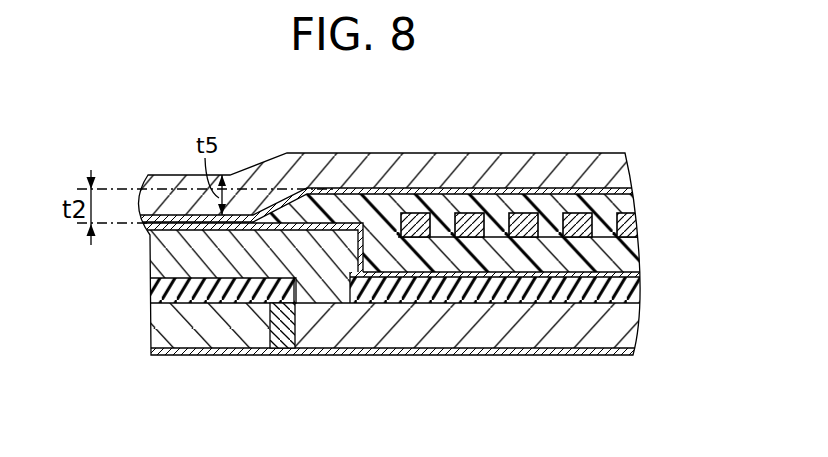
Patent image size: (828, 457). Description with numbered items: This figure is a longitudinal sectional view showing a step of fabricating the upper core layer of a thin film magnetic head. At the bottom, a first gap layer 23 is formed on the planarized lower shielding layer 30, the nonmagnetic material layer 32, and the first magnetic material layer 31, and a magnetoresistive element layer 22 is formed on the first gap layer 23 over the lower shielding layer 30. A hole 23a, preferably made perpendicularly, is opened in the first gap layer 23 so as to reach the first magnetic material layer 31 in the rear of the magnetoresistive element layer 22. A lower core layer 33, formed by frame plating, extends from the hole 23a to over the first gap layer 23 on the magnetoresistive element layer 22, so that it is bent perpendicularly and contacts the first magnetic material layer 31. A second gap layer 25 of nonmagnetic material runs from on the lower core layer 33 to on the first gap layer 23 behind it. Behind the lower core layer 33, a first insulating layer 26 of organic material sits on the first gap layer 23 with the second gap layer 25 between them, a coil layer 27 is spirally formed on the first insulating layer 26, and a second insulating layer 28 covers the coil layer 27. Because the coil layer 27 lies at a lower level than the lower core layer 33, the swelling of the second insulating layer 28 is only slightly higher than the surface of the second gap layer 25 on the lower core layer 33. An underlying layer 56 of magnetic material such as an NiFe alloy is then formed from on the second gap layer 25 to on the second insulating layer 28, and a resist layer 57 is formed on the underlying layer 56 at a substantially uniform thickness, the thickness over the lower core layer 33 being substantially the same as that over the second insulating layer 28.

The magnetoresistive element layer 22 is at (193, 292).
The first gap layer 23 is at (247, 293).
The hole 23a is at (300, 292).
The second gap layer 25 is at (460, 275).
The first insulating layer 26 is at (613, 252).
The coil layer 27 is at (580, 222).
The second insulating layer 28 is at (541, 203).
The lower shielding layer 30 is at (172, 318).
The first magnetic material layer 31 is at (615, 327).
The nonmagnetic material layer 32 is at (283, 322).
The lower core layer 33 is at (172, 263).
The underlying layer 56 is at (470, 189).
The resist layer 57 is at (390, 170).